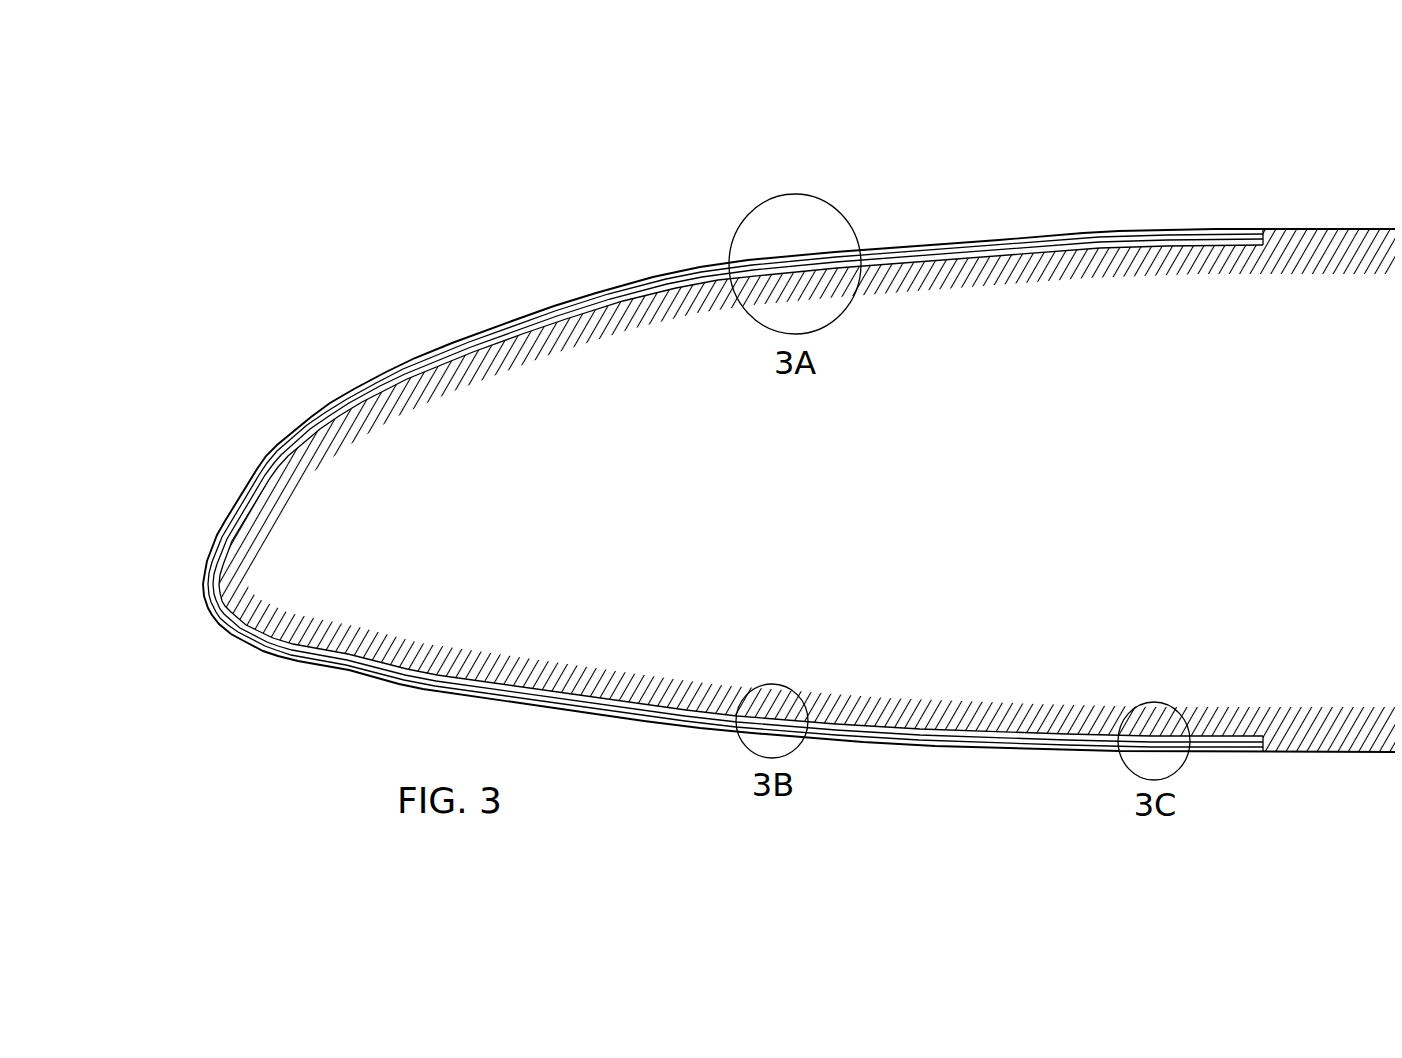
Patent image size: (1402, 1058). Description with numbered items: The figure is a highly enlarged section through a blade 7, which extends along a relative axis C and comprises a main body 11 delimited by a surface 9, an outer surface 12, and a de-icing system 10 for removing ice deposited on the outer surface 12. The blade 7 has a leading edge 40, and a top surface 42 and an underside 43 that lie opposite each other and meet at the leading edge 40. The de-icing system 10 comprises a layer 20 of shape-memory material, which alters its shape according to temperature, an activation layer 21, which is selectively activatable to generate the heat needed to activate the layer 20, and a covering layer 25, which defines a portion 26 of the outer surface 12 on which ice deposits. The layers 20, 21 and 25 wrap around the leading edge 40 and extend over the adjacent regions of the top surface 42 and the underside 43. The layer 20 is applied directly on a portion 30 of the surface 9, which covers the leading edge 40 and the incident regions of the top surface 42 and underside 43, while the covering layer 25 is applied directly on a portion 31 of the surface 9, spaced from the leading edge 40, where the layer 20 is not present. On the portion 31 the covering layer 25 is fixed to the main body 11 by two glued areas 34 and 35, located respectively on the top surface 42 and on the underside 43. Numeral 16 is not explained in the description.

The de-icing system 10 is at (799, 397).
The blade 7 is at (1107, 154).
The top surface 42 is at (980, 222).
The portion of surface 9 31 is at (1078, 230).
The covering layer 25 is at (913, 243).
The outer surface 12 is at (1131, 224).
The outer layer 16 is at (1198, 209).
The surface 9 is at (1212, 230).
The main body 11 is at (1260, 320).
The glued area 34 is at (1162, 241).
The activation layer 21 is at (946, 271).
The layer of shape-memory material 20 is at (563, 317).
The portion of surface 12 26 is at (354, 387).
The portion of surface 9 30 is at (293, 437).
The leading edge 40 is at (197, 584).
The axis C is at (1316, 489).
The glued area 35 is at (1212, 733).
The underside 43 is at (948, 772).